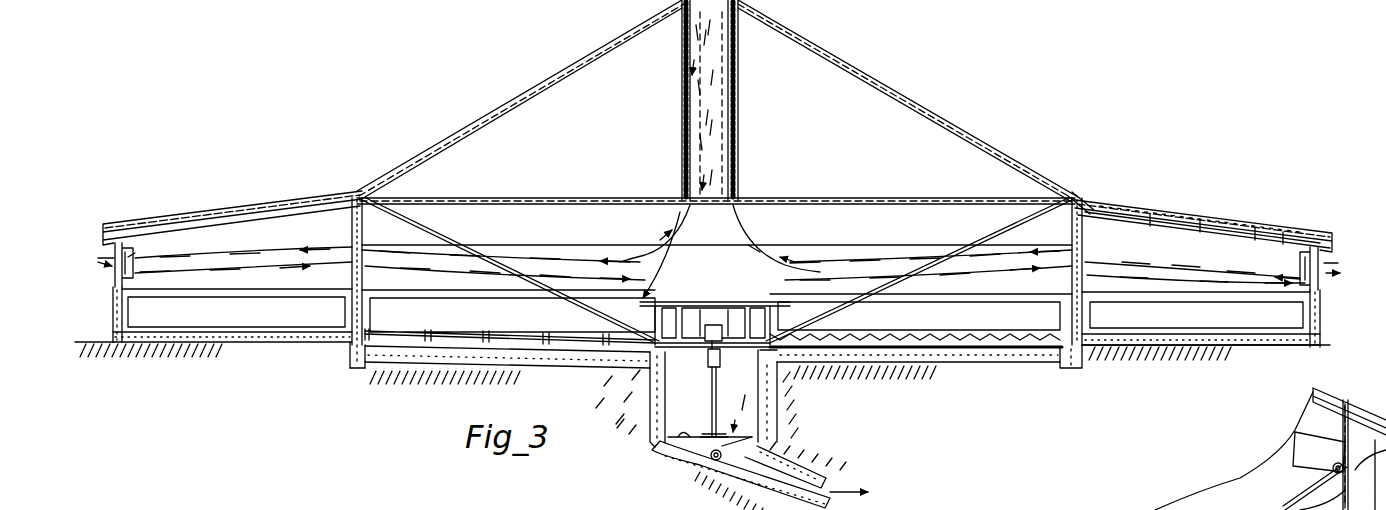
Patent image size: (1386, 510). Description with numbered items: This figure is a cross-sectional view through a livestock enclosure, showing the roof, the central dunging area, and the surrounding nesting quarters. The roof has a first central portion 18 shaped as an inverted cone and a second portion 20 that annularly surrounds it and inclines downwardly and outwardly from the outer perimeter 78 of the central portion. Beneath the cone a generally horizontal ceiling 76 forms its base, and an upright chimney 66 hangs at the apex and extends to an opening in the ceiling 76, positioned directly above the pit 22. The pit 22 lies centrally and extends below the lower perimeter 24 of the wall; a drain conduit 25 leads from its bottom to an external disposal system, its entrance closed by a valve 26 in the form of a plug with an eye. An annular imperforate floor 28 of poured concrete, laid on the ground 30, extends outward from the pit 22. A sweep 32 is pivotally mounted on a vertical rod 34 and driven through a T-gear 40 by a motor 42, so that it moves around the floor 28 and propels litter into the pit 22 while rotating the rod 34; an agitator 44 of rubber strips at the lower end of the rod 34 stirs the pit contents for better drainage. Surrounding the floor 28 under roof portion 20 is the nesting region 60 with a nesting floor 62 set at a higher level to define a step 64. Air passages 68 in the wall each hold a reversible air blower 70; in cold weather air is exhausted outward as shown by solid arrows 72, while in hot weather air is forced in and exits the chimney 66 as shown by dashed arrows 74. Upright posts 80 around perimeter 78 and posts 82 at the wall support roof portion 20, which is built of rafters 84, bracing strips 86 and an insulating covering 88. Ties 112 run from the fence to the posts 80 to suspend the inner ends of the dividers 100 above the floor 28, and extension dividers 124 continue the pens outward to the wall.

The first central roof portion 18 is at (940, 113).
The second roof portion 20 is at (1140, 210).
The pit 22 is at (773, 398).
The lower perimeter of wall 24 is at (1318, 352).
The drain conduit 25 is at (823, 463).
The valve 26 is at (711, 462).
The annular imperforate floor 28 is at (502, 350).
The ground 30 is at (565, 370).
The sweep 32 is at (1040, 362).
The vertical rod 34 is at (712, 392).
The T-gear 40 is at (709, 360).
The motor 42 is at (709, 325).
The agitator 44 is at (670, 441).
The nesting region 60 is at (1219, 266).
The nesting floor 62 is at (1195, 325).
The step 64 is at (364, 360).
The chimney 66 is at (741, 108).
The air passages 68 is at (1322, 292).
The reversible air blower 70 is at (121, 252).
The solid arrows 72 is at (592, 275).
The dashed arrows 74 is at (561, 282).
The ceiling 76 is at (590, 199).
The outer perimeter of first roof portion 78 is at (1096, 193).
The upright posts 80 is at (357, 243).
The upright posts 82 is at (112, 292).
The rafters 84 is at (283, 232).
The bracing strips 86 is at (1283, 243).
The covering 88 is at (1193, 215).
The dividers 100 is at (659, 250).
The ties 112 is at (440, 243).
The extension dividers 124 is at (240, 310).